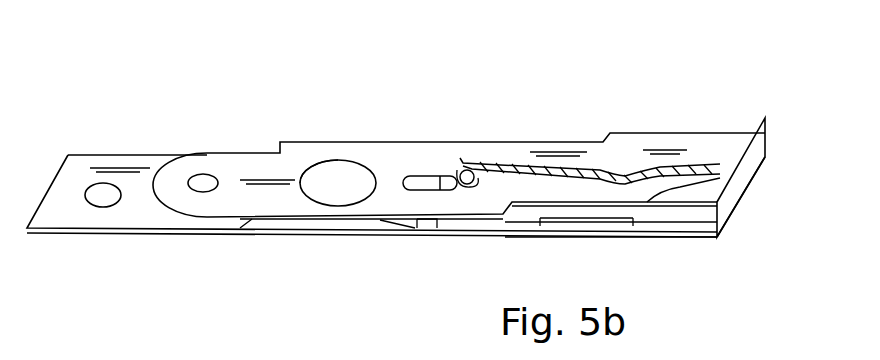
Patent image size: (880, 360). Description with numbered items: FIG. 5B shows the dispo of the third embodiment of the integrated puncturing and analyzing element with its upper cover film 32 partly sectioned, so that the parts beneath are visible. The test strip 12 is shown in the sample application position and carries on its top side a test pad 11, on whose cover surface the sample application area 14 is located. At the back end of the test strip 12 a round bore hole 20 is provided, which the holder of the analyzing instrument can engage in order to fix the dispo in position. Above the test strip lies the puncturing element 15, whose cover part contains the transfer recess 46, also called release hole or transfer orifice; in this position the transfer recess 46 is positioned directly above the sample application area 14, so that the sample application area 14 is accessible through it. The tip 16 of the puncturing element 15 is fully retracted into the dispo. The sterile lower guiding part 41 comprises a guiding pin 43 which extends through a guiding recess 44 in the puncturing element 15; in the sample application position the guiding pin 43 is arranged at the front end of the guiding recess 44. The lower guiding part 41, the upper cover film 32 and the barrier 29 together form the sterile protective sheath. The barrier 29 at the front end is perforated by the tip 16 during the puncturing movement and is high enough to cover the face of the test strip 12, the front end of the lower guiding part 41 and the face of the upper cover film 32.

The test pad 11 is at (338, 223).
The test strip 12 is at (142, 212).
The sample application area 14 is at (348, 185).
The puncturing element 15 is at (257, 195).
The tip 16 is at (720, 183).
The bore hole 20 is at (102, 193).
The barrier 29 is at (732, 195).
The upper cover film 32 is at (628, 140).
The guiding part 41 is at (707, 227).
The guiding pin 43 is at (463, 168).
The guiding recess 44 is at (425, 178).
The transfer recess 46 is at (338, 160).